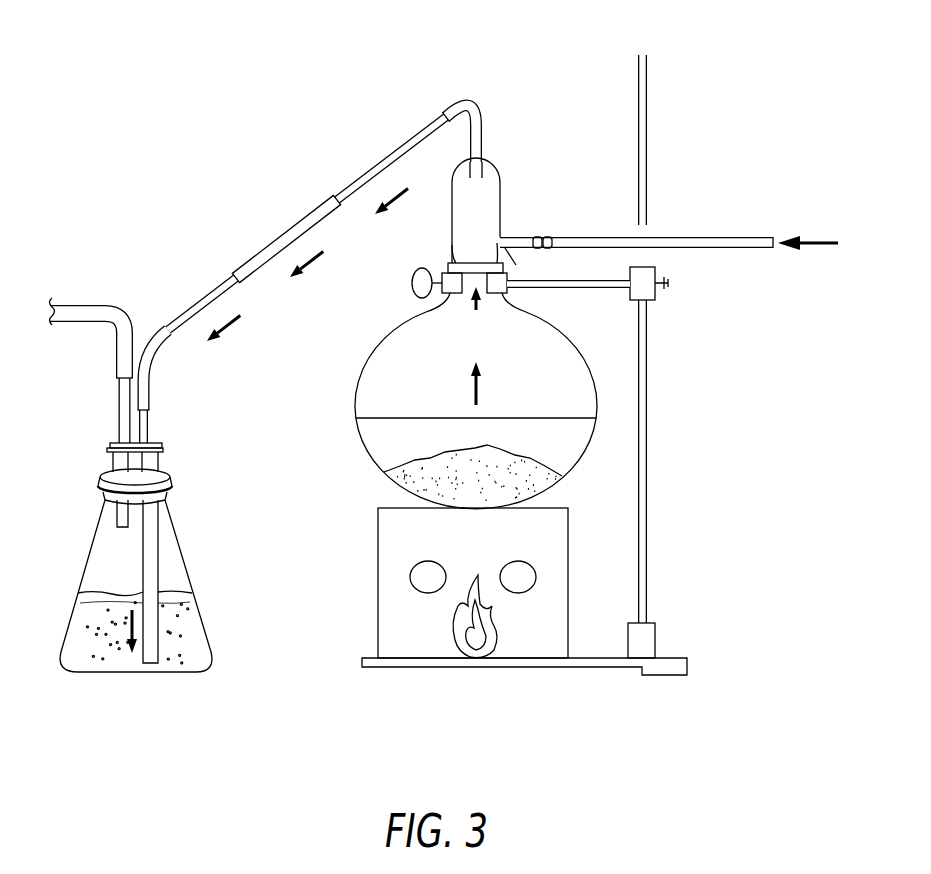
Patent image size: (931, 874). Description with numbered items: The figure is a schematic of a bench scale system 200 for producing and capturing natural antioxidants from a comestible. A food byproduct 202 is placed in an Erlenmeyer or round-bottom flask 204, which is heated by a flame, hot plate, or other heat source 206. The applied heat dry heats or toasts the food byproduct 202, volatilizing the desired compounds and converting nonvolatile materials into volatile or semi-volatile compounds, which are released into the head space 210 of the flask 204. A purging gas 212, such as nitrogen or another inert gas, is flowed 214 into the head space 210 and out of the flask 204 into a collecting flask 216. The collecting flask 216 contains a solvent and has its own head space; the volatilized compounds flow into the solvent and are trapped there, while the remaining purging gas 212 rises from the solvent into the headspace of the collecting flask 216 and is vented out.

The system 200 is at (158, 78).
The food byproduct 202 is at (405, 468).
The flask 204 is at (363, 445).
The heat source 206 is at (407, 632).
The head space 210 is at (412, 350).
The purging gas 212 is at (816, 243).
The flow of purging gas 214 is at (284, 322).
The collecting flask 216 is at (100, 523).